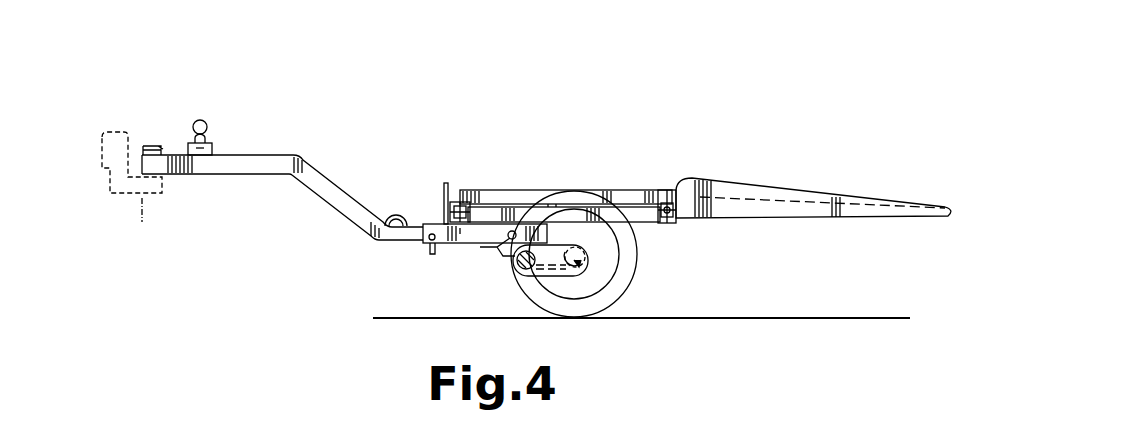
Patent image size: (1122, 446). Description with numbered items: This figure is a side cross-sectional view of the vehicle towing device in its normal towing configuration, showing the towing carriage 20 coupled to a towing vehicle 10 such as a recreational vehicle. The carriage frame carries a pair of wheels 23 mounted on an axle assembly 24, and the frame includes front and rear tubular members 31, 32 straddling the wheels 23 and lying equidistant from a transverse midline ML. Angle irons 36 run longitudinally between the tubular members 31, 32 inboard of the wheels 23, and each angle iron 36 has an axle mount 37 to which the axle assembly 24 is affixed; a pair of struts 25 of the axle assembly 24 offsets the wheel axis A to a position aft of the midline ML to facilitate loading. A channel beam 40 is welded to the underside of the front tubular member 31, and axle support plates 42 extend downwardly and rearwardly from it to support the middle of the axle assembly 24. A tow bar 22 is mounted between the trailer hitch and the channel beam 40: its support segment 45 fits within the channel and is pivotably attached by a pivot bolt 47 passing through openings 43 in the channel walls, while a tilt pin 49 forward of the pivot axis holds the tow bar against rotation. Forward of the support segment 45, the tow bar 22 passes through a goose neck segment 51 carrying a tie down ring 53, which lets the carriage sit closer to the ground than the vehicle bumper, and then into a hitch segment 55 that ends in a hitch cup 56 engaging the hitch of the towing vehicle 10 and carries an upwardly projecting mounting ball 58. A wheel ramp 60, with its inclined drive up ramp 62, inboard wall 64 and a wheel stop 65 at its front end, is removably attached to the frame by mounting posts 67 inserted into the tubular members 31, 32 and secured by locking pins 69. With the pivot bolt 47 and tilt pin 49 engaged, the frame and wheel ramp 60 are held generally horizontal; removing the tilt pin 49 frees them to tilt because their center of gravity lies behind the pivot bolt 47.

The towing vehicle 10 is at (116, 126).
The towing carriage 20 is at (676, 232).
The tow bar 22 is at (323, 155).
The wheels 23 is at (628, 279).
The axle assembly 24 is at (522, 275).
The struts 25 is at (569, 273).
The front tubular member 31 is at (450, 217).
The rear tubular member 32 is at (680, 216).
The angle irons 36 is at (572, 210).
The axle mount 37 is at (552, 225).
The channel beam 40 is at (418, 238).
The axle support plates 42 is at (478, 247).
The openings 43 is at (518, 264).
The support segment 45 is at (392, 240).
The pivot bolt 47 is at (510, 239).
The tilt pin 49 is at (431, 256).
The goose neck segment 51 is at (358, 194).
The tie down ring 53 is at (398, 205).
The hitch segment 55 is at (257, 153).
The hitch cup 56 is at (157, 146).
The mounting ball 58 is at (206, 124).
The wheel ramp 60 is at (697, 170).
The drive up ramp 62 is at (802, 195).
The inboard wall 64 is at (775, 212).
The wheel stop 65 is at (447, 183).
The mounting posts 67 is at (488, 206).
The locking pins 69 is at (462, 200).
The midline ML is at (562, 202).
The wheel axis A is at (580, 268).